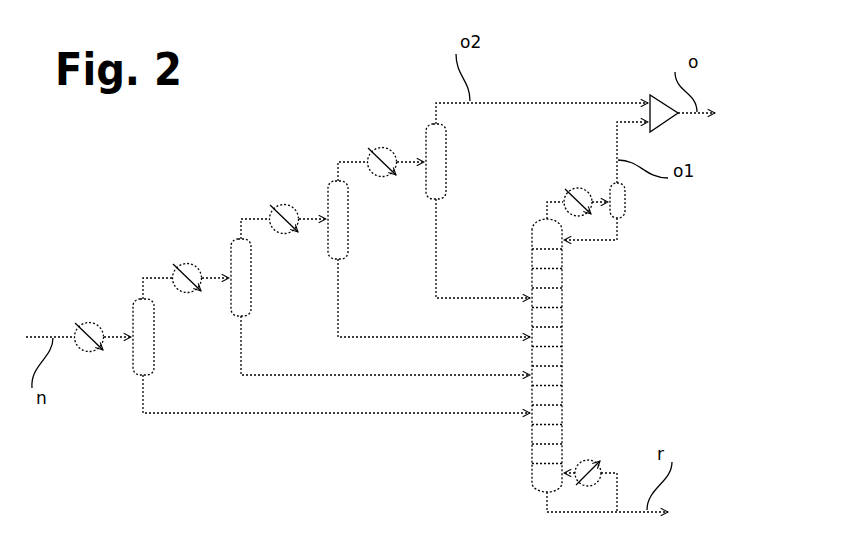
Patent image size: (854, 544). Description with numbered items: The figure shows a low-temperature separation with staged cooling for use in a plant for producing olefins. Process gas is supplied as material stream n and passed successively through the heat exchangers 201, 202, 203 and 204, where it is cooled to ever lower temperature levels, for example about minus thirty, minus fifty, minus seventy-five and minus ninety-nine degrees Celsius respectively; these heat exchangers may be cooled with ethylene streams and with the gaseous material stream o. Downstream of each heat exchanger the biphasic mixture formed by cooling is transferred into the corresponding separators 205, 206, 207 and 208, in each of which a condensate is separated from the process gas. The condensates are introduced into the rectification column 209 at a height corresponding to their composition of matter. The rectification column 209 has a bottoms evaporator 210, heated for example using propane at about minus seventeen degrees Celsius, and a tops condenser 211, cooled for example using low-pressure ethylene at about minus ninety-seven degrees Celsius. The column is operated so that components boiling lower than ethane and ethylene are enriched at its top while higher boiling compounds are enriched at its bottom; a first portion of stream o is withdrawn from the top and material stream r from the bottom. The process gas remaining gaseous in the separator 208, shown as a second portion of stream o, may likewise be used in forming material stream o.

The heat exchanger 201 is at (80, 322).
The heat exchanger 202 is at (178, 263).
The heat exchanger 203 is at (275, 205).
The heat exchanger 204 is at (372, 148).
The separator 205 is at (155, 333).
The separator 206 is at (251, 278).
The separator 207 is at (348, 220).
The separator 208 is at (446, 160).
The rectification column 209 is at (562, 296).
The bottoms evaporator 210 is at (595, 460).
The tops condenser 211 is at (585, 188).